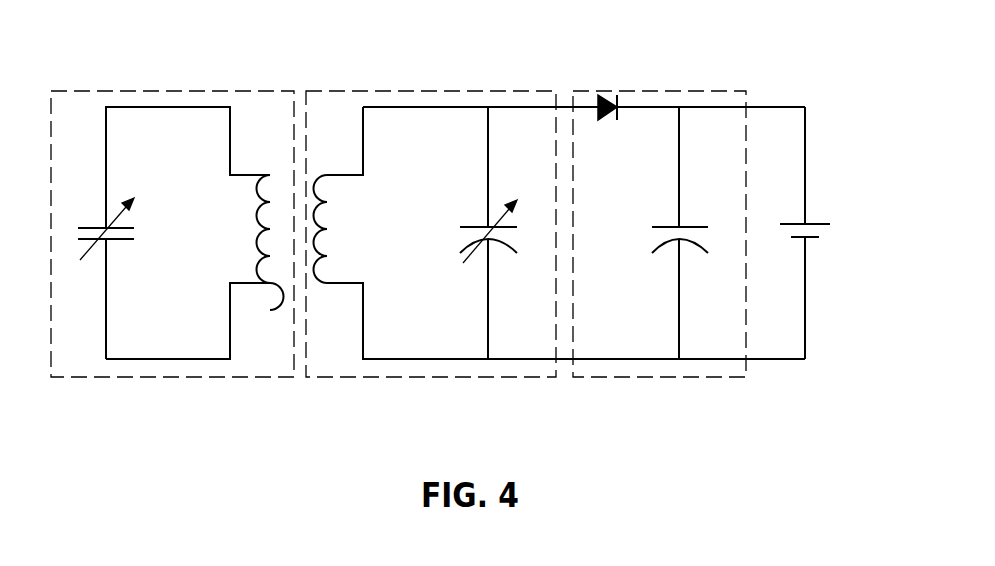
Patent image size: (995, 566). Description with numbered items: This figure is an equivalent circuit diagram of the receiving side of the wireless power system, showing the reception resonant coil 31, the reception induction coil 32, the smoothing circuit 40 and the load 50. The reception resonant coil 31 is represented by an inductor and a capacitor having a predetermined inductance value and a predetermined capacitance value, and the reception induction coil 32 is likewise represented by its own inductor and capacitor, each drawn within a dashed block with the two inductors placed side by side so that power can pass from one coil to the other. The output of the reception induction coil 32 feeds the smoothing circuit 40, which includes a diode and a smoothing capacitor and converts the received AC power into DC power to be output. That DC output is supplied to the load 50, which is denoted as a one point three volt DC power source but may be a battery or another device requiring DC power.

The reception resonant coil 31 is at (233, 90).
The reception induction coil 32 is at (397, 90).
The smoothing circuit 40 is at (687, 90).
The load 50 is at (813, 212).